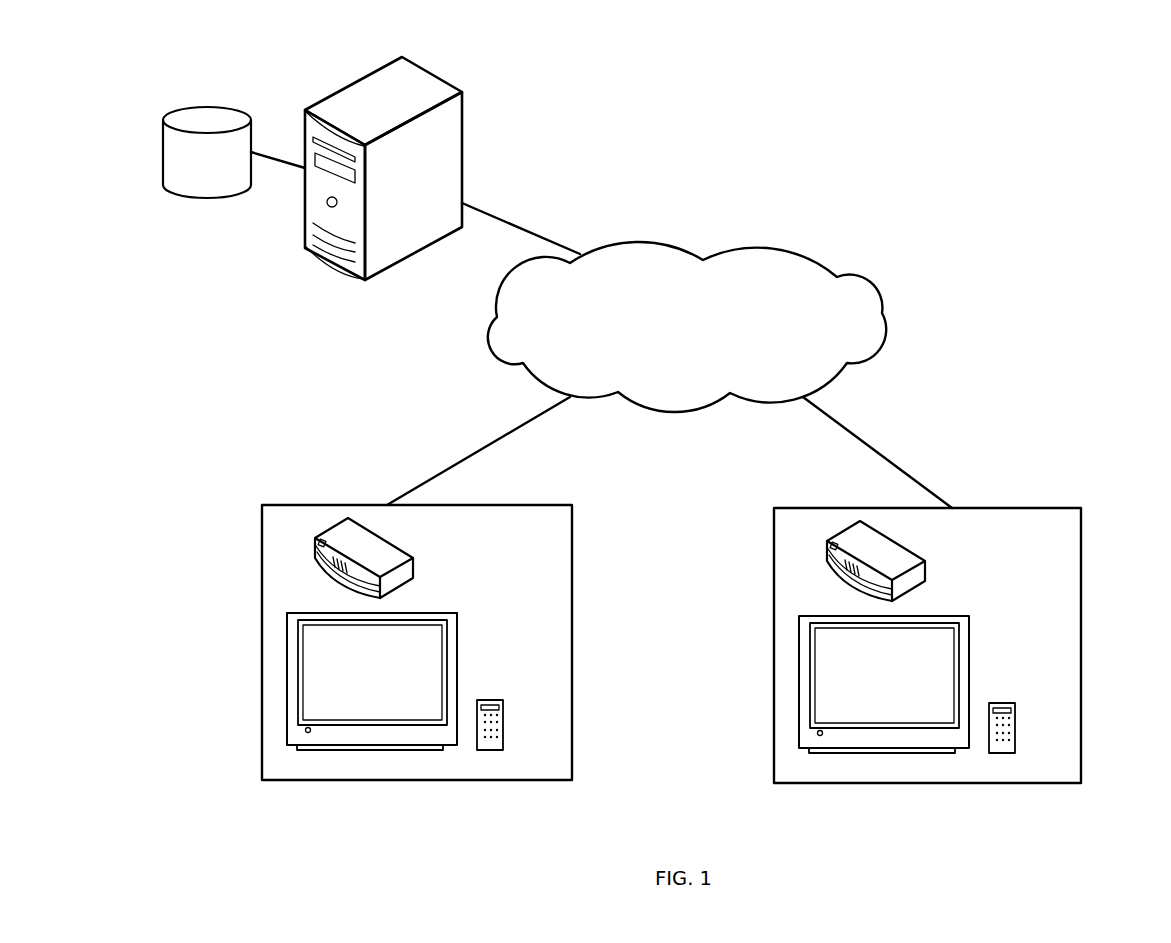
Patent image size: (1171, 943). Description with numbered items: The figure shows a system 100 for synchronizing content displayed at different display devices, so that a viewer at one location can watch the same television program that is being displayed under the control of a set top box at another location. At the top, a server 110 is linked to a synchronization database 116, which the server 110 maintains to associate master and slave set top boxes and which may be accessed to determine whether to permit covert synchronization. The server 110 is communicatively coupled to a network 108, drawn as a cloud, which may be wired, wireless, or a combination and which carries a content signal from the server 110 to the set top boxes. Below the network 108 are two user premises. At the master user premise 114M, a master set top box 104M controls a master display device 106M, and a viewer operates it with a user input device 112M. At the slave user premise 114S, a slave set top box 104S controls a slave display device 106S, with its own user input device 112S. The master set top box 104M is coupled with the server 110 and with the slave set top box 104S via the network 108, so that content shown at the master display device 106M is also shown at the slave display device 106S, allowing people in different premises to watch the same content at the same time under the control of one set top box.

The system 100 is at (705, 36).
The synchronization database 116 is at (157, 128).
The server 110 is at (475, 113).
The network 108 is at (703, 351).
The slave user premise 114S is at (595, 533).
The slave set top box 104S is at (422, 567).
The slave display device 106S is at (463, 660).
The user input device 112S is at (507, 725).
The master user premise 114M is at (1112, 535).
The master set top box 104M is at (907, 561).
The master display device 106M is at (915, 684).
The user input device 112M is at (1031, 718).